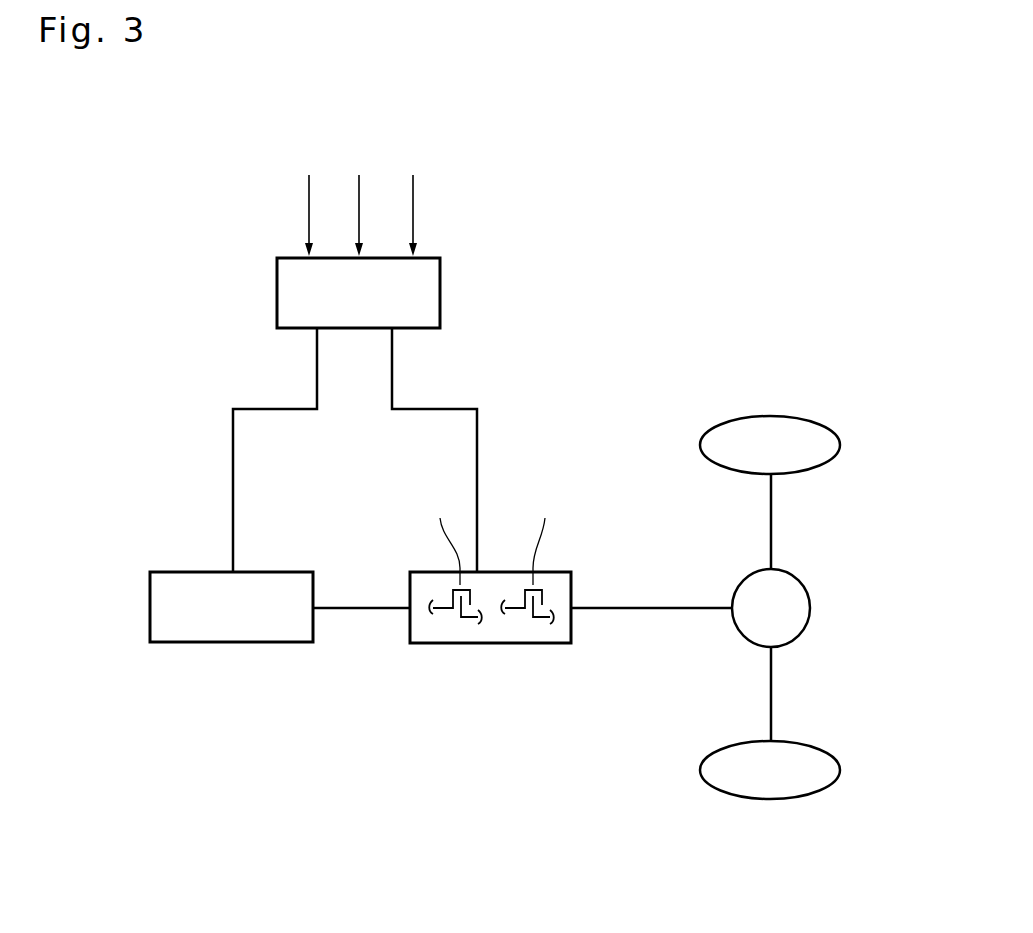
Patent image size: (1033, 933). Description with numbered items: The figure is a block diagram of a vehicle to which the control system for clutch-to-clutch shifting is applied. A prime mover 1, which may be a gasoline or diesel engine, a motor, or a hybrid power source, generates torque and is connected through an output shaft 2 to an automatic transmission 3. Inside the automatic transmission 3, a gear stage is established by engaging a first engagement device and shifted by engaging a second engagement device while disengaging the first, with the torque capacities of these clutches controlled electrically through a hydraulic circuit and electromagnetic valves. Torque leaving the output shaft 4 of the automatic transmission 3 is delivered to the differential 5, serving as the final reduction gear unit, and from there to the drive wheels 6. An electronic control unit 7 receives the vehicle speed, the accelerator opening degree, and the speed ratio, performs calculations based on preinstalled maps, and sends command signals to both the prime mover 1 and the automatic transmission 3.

The prime mover 1 is at (232, 642).
The output shaft 2 is at (360, 609).
The automatic transmission 3 is at (490, 643).
The output shaft 4 is at (640, 609).
The differential 5 is at (810, 612).
The drive wheels 6 is at (840, 443).
The electronic control unit 7 is at (440, 290).